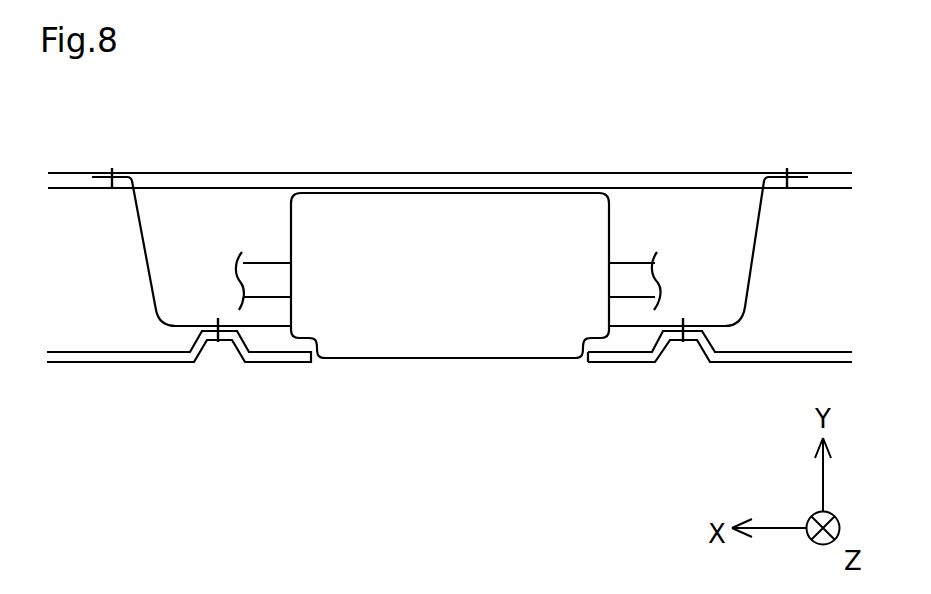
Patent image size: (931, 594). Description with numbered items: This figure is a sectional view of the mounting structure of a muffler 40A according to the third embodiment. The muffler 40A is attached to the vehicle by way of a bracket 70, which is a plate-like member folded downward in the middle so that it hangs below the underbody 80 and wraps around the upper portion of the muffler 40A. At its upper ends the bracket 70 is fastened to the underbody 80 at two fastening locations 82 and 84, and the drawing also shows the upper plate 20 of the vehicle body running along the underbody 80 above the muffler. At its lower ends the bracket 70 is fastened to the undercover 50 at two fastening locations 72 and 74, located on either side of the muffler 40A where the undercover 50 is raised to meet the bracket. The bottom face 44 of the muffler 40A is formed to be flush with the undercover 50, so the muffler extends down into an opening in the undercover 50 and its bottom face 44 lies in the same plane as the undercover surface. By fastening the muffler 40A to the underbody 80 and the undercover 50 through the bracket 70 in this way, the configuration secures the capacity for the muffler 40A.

The upper plate 20 is at (828, 188).
The bracket 70 is at (748, 293).
The fastening location 82 is at (112, 174).
The fastening location 84 is at (787, 174).
The underbody 80 is at (348, 172).
The muffler 40A is at (610, 228).
The bottom face 44 is at (443, 359).
The undercover 50 is at (755, 362).
The fastening location 72 is at (219, 342).
The fastening location 74 is at (683, 342).